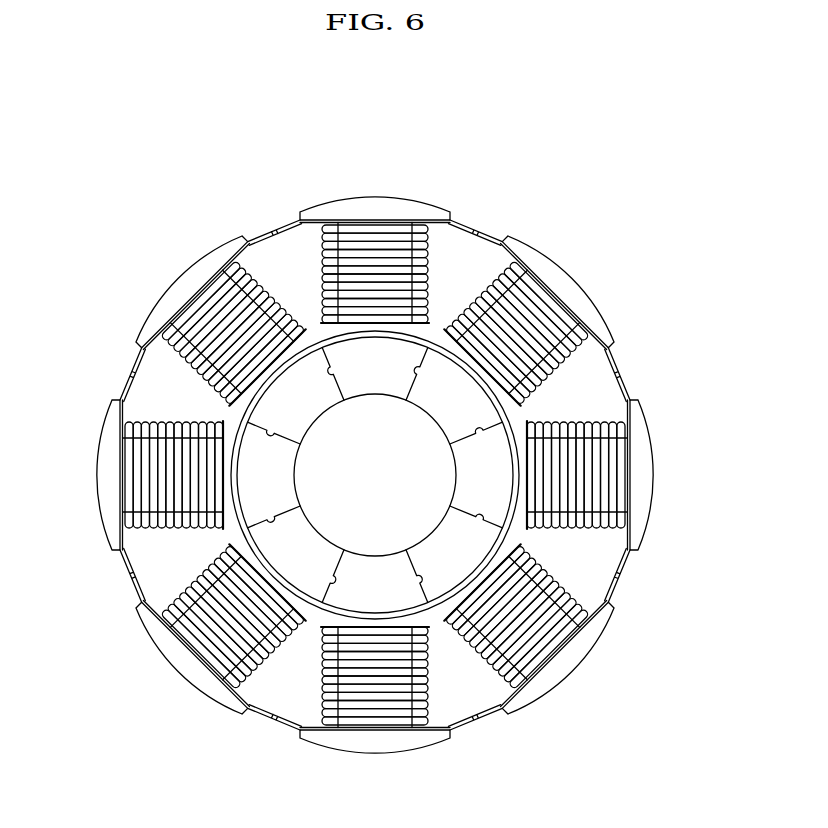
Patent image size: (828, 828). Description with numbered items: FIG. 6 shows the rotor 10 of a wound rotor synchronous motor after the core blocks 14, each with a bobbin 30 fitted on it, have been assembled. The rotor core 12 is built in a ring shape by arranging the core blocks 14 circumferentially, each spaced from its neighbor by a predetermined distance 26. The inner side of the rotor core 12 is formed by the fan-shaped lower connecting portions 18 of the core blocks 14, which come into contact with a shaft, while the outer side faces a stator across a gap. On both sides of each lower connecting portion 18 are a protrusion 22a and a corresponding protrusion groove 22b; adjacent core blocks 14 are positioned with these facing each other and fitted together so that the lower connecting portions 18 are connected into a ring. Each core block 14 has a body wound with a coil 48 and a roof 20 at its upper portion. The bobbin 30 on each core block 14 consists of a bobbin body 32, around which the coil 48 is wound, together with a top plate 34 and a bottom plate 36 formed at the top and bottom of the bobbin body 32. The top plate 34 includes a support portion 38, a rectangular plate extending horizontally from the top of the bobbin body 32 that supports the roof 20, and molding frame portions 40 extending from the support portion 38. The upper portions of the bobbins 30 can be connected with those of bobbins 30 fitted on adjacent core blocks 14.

The rotor 10 is at (364, 84).
The rotor core 12 is at (521, 192).
The core block 14 is at (382, 188).
The lower connecting portion 18 is at (281, 407).
The roof 20 is at (178, 283).
The protrusion 22a is at (268, 433).
The protrusion groove 22b is at (326, 373).
The predetermined distance 26 is at (291, 257).
The bobbin 30 is at (627, 575).
The bobbin body 32 is at (485, 667).
The top plate 34 is at (60, 357).
The bottom plate 36 is at (158, 553).
The support portion 38 is at (117, 417).
The molding frame portion 40 is at (122, 388).
The coil 48 is at (613, 363).